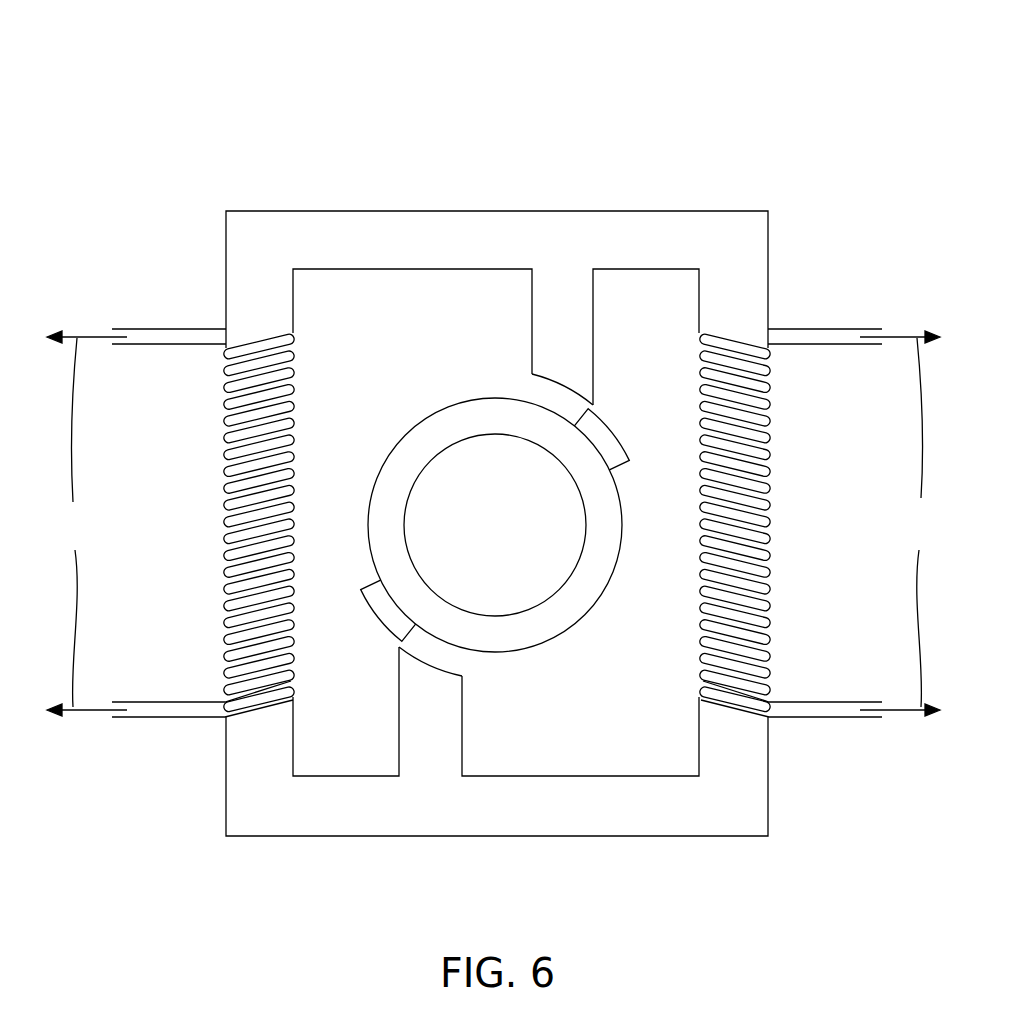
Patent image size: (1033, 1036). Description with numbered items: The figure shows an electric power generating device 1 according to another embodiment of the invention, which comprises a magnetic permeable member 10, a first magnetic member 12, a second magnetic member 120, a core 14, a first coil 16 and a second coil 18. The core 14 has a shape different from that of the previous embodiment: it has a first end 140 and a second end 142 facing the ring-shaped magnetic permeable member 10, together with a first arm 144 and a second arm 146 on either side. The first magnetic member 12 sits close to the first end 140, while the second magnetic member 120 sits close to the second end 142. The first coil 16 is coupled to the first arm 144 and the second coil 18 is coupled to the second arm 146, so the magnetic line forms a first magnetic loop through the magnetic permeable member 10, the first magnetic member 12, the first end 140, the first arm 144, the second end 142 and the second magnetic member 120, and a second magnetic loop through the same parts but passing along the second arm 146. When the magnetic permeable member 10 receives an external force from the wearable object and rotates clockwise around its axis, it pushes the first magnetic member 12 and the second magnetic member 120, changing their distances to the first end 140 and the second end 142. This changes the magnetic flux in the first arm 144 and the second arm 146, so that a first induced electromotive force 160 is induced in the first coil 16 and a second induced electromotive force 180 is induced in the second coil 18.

The electric power generating device 1 is at (507, 83).
The core 14 is at (466, 211).
The second arm 146 is at (237, 283).
The first arm 144 is at (745, 285).
The first end 140 is at (532, 372).
The second end 142 is at (463, 680).
The magnetic permeable member 10 is at (576, 626).
The first magnetic member 12 is at (626, 466).
The second magnetic member 120 is at (368, 586).
The second coil 18 is at (224, 472).
The first coil 16 is at (768, 471).
The second induced electromotive force 180 is at (170, 523).
The first induced electromotive force 160 is at (820, 523).